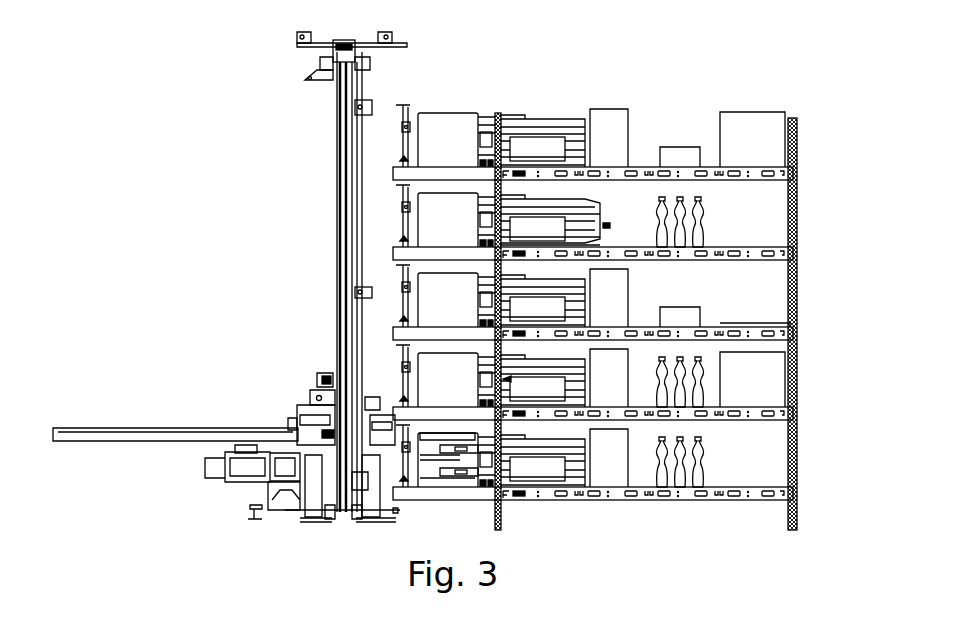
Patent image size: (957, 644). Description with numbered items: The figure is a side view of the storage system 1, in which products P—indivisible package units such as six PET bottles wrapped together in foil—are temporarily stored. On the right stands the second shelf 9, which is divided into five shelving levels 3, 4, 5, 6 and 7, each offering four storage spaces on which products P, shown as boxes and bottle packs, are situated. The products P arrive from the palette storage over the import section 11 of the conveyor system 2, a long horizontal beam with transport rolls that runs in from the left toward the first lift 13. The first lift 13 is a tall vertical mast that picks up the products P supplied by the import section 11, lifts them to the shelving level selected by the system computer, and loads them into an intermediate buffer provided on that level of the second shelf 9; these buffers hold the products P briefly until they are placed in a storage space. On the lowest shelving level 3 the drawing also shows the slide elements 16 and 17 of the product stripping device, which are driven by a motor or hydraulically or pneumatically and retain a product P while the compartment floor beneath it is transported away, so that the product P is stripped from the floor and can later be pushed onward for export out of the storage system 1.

The storage system 1 is at (222, 102).
The conveyor system 2 is at (150, 338).
The shelving level 3 is at (797, 497).
The shelving level 4 is at (797, 418).
The shelving level 5 is at (797, 333).
The shelving level 6 is at (797, 253).
The shelving level 7 is at (797, 173).
The second shelf 9 is at (796, 120).
The import section 11 is at (123, 441).
The first lift 13 is at (347, 238).
The slide element 16 is at (437, 448).
The slide element 17 is at (446, 478).
The product P is at (654, 267).